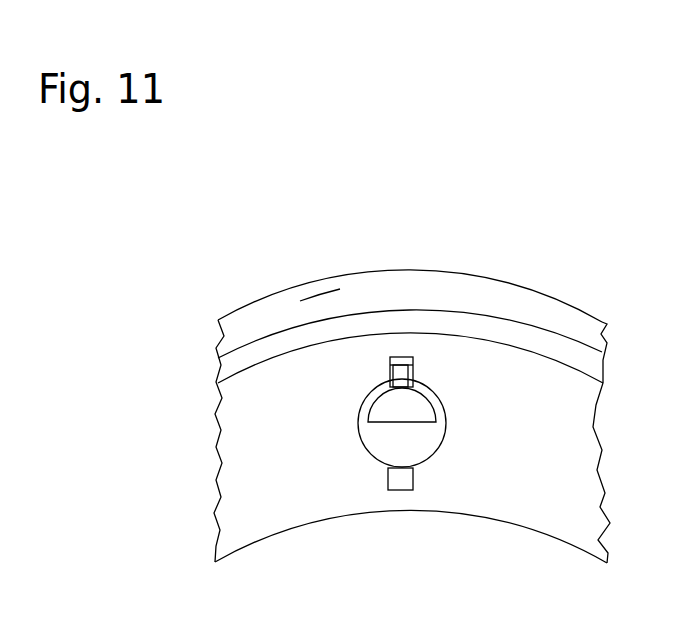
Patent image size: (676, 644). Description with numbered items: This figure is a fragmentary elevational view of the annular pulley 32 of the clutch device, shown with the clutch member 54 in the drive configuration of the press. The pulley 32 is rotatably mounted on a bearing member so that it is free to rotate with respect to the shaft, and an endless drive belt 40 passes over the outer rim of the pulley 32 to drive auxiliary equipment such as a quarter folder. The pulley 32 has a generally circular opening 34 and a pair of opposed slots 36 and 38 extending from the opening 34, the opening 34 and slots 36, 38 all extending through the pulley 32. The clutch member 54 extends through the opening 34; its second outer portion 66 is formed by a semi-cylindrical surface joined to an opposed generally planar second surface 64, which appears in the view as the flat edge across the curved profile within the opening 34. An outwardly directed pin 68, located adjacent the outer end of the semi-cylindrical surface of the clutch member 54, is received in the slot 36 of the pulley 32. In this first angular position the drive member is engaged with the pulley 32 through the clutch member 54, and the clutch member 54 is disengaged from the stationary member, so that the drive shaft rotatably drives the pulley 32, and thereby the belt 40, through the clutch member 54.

The pulley 32 is at (489, 278).
The endless drive belt 40 is at (318, 322).
The clutch member 54 is at (405, 373).
The slot 36 is at (393, 373).
The pin 68 is at (413, 372).
The circular opening 34 is at (447, 421).
The second planar surface 64 is at (373, 423).
The second outer portion 66 is at (413, 423).
The slot 38 is at (388, 483).